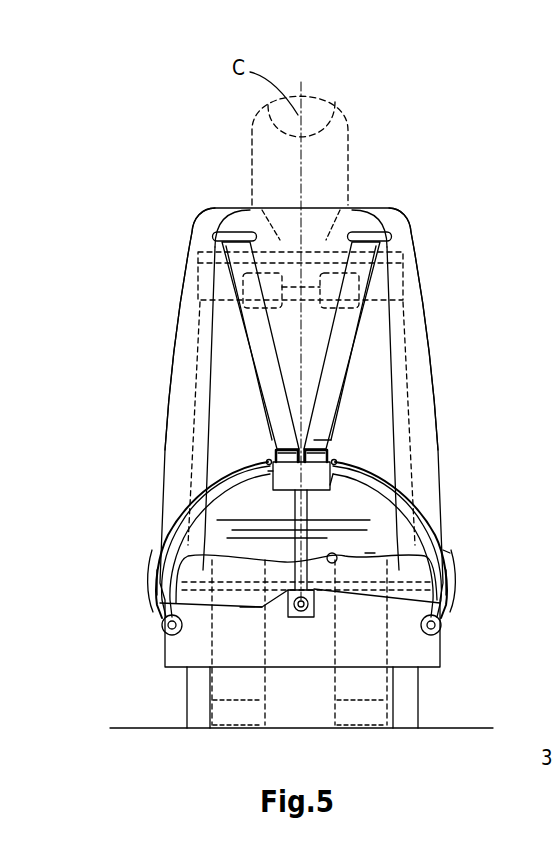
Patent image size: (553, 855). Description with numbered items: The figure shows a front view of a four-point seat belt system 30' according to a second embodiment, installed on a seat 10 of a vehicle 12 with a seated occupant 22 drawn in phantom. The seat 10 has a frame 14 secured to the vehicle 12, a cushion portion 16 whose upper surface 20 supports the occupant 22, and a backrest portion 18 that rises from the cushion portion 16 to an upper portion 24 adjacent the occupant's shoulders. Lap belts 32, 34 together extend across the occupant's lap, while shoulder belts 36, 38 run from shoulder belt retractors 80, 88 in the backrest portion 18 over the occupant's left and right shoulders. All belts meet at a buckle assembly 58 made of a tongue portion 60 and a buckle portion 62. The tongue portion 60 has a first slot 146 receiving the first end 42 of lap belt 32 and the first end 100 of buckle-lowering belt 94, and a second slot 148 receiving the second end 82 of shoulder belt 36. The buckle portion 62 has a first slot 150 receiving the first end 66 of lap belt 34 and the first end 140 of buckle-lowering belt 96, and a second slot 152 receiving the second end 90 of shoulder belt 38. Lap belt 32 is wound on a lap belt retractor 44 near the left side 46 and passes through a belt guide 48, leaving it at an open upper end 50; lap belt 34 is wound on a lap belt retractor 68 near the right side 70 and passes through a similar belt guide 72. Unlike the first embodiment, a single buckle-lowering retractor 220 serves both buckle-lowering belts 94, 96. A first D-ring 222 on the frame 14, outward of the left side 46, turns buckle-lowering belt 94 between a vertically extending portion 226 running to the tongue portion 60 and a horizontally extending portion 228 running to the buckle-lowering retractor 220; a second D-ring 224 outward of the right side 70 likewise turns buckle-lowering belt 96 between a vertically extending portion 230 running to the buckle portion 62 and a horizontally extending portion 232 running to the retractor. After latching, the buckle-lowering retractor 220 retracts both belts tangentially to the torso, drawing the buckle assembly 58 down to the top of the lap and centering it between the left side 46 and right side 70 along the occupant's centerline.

The seat 10 is at (424, 165).
The vehicle 12 is at (137, 728).
The frame 14 is at (412, 335).
The cushion portion 16 is at (234, 576).
The backrest portion 18 is at (406, 228).
The upper surface 20 is at (336, 568).
The vehicle occupant 22 is at (336, 92).
The upper portion 24 is at (212, 220).
The four-point seat belt system 30' is at (220, 227).
The lap belt 32 is at (348, 486).
The lap belt 34 is at (270, 478).
The shoulder belt 36 is at (350, 325).
The shoulder belt 38 is at (240, 313).
The first end of lap belt 42 is at (348, 468).
The lap belt retractor 44 is at (448, 629).
The left side 46 is at (415, 252).
The belt guide 48 is at (462, 556).
The open upper end 50 is at (443, 548).
The buckle assembly 58 is at (313, 493).
The tongue portion 60 is at (329, 441).
The buckle portion 62 is at (259, 442).
The first end of lap belt 66 is at (268, 471).
The lap belt retractor 68 is at (164, 636).
The right side 70 is at (191, 240).
The belt guide 72 is at (149, 547).
The shoulder belt retractor 80 is at (337, 266).
The second end of shoulder belt 82 is at (327, 432).
The shoulder belt retractor 88 is at (267, 266).
The second end of shoulder belt 90 is at (296, 408).
The buckle-lowering belt 94 is at (392, 512).
The buckle-lowering belt 96 is at (215, 492).
The first end of buckle-lowering belt 100 is at (344, 476).
The first end of buckle-lowering belt 140 is at (268, 486).
The first slot 146 is at (346, 460).
The second slot 148 is at (346, 449).
The first slot 150 is at (267, 463).
The second slot 152 is at (274, 446).
The buckle-lowering retractor 220 is at (298, 624).
The first D-ring 222 is at (440, 602).
The second D-ring 224 is at (166, 602).
The vertically extending portion 226 is at (452, 575).
The horizontally extending portion 228 is at (370, 553).
The vertically extending portion 230 is at (166, 573).
The horizontally extending portion 232 is at (244, 607).